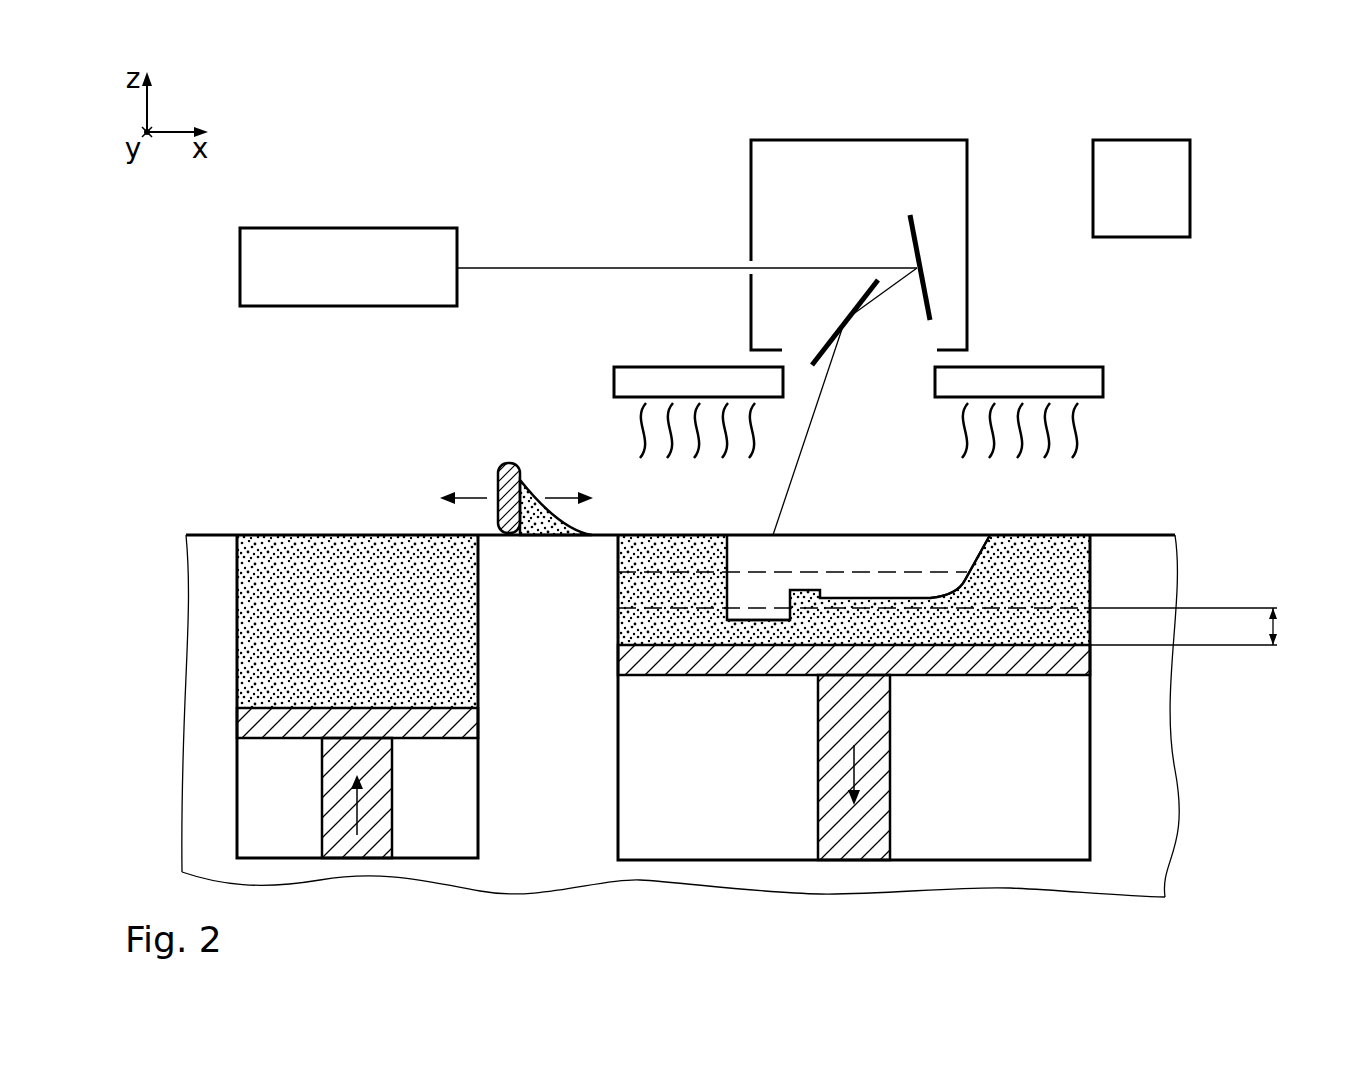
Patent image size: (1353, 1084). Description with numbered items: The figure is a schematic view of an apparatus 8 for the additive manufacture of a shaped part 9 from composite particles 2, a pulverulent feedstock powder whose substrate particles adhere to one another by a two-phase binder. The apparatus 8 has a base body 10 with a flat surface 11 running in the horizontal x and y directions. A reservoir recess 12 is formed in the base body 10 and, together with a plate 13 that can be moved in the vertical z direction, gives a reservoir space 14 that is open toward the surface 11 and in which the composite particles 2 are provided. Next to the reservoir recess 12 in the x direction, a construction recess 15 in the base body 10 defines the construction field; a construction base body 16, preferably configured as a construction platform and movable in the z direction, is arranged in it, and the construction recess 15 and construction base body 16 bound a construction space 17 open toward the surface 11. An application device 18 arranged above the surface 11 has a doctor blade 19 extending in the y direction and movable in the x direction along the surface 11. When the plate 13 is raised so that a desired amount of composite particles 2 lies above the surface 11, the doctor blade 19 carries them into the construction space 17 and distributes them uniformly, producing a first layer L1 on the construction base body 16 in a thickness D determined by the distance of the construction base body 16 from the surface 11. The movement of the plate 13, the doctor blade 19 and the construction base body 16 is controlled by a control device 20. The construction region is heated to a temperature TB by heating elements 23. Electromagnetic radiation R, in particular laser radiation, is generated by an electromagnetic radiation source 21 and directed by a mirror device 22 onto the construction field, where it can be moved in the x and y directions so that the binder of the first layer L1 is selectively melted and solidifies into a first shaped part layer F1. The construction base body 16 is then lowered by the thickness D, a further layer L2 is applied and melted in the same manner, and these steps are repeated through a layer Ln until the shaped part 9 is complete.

The composite particles 2 is at (360, 535).
The apparatus 8 is at (717, 287).
The shaped part 9 is at (900, 545).
The base body 10 is at (545, 840).
The surface 11 is at (205, 535).
The reservoir recess 12 is at (237, 809).
The plate 13 is at (248, 728).
The reservoir space 14 is at (237, 616).
The construction recess 15 is at (1090, 826).
The construction base body 16 is at (1080, 660).
The construction space 17 is at (1090, 593).
The application device 18 is at (476, 470).
The doctor blade 19 is at (503, 466).
The control device 20 is at (1183, 186).
The electromagnetic radiation source 21 is at (247, 268).
The mirror device 22 is at (836, 150).
The heating elements 23 is at (625, 382).
The electromagnetic radiation R is at (614, 268).
The temperature TB is at (884, 430).
The thickness D is at (1196, 627).
The layer Ln is at (623, 558).
The further layer L2 is at (623, 598).
The first layer L1 is at (623, 641).
The first shaped part layer F1 is at (745, 613).